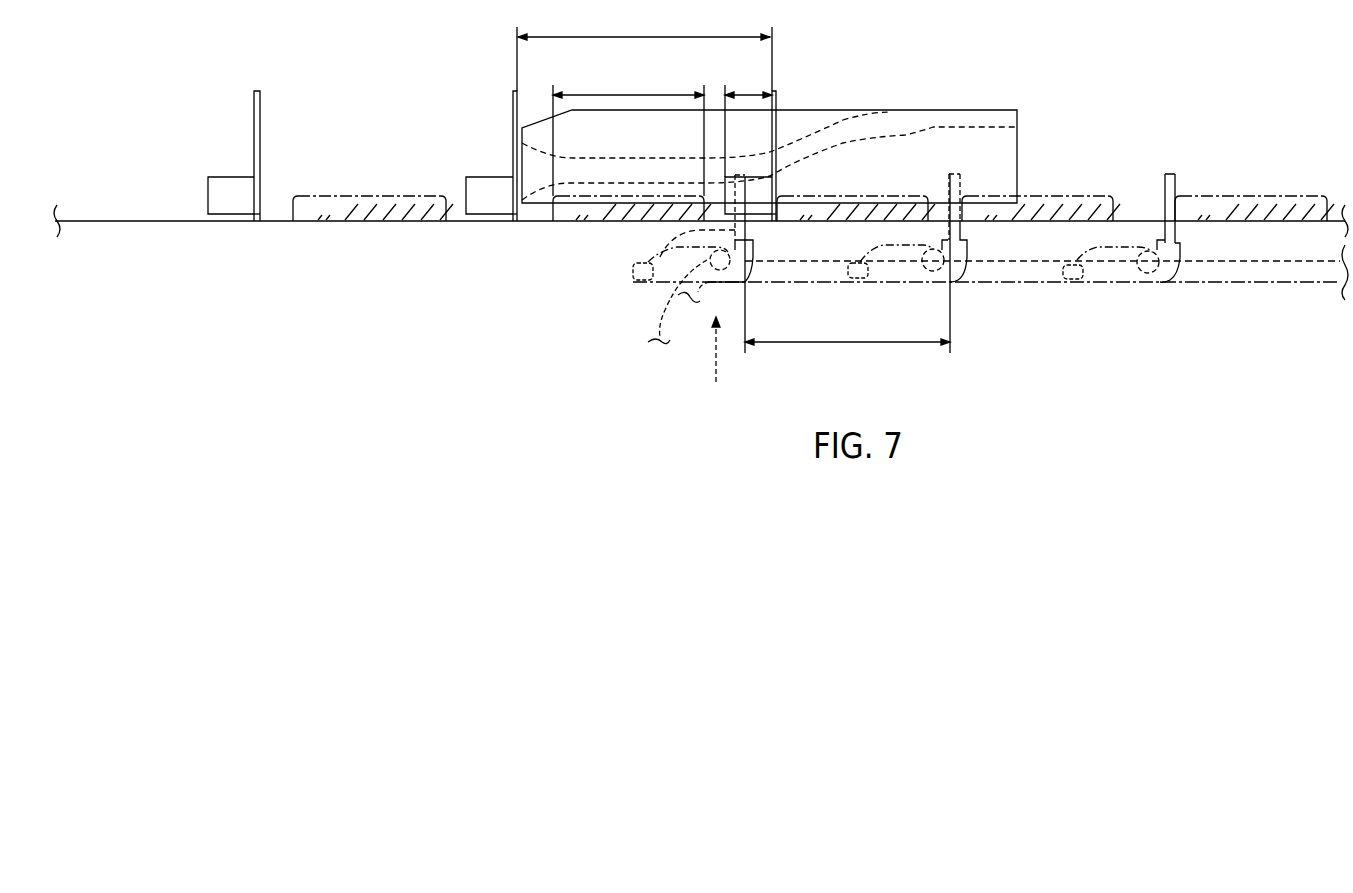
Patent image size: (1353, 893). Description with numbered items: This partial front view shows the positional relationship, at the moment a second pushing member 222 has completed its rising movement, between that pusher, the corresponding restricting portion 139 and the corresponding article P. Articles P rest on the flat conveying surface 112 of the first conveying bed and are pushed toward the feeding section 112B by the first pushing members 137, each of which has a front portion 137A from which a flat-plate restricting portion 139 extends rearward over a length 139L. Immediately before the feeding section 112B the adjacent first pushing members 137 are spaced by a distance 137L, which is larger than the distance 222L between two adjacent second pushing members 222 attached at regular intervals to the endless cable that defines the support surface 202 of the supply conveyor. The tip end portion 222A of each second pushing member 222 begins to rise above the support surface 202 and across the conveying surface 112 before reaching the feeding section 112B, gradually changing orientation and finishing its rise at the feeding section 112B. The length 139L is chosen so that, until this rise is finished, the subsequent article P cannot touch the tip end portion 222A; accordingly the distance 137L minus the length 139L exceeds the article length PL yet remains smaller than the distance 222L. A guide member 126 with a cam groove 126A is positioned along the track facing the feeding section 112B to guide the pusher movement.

The conveying surface 112 is at (158, 221).
The feeding section 112B is at (723, 365).
The first pushing member 137 is at (256, 91).
The front portion 137A is at (258, 223).
The distance 137L is at (644, 51).
The restricting portion 139 is at (225, 205).
The rearward extending length 139L is at (746, 119).
The article P is at (340, 197).
The length of the articles PL is at (628, 133).
The guide member 126 is at (1007, 167).
The cam groove 126A is at (905, 135).
The second pushing member 222 is at (672, 248).
The tip end portion 222A is at (740, 173).
The distance 222L is at (847, 263).
The support surface 202 is at (1132, 221).